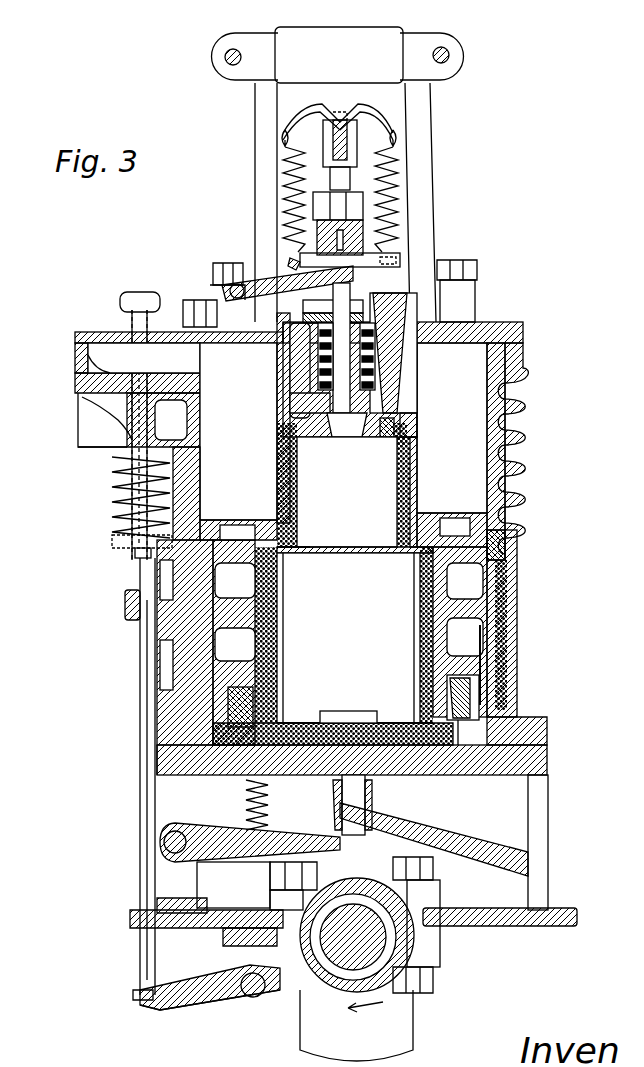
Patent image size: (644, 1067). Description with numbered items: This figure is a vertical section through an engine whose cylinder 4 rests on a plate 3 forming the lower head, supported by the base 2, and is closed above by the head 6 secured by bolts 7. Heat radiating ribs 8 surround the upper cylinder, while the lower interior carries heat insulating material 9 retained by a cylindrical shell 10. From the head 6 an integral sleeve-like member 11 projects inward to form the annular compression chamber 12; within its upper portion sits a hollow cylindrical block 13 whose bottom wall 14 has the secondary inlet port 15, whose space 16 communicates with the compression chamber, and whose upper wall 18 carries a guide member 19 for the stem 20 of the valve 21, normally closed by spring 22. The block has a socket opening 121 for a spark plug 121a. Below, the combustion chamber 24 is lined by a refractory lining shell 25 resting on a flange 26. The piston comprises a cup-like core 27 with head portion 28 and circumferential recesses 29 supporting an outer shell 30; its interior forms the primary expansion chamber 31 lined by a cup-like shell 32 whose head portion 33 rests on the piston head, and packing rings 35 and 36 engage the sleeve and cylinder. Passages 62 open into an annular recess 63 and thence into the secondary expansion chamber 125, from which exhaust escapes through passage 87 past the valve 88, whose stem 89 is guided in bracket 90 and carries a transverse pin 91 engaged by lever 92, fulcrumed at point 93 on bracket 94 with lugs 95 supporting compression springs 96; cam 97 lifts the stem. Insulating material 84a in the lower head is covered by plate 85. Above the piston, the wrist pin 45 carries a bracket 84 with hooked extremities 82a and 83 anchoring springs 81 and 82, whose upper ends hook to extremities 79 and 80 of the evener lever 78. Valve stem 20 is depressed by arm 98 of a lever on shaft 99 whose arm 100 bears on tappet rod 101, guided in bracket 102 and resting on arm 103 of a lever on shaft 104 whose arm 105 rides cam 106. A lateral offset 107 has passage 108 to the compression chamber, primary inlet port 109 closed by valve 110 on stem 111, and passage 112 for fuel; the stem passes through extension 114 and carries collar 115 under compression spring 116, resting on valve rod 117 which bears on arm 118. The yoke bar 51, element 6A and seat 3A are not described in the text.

The yoke cross bar 51 is at (385, 28).
The evener lever 78 is at (353, 112).
The hooked extremity 79 is at (286, 132).
The hooked extremity 80 is at (393, 132).
The spring 81 is at (281, 181).
The spring 82 is at (393, 160).
The wrist pin 45 is at (357, 228).
The hooked extremity 82a is at (292, 262).
The bracket 84 is at (367, 254).
The hooked extremity 83 is at (400, 258).
The arm 98 is at (262, 275).
The shaft 99 is at (232, 282).
The arm 100 is at (155, 298).
The tappet rod 101 is at (130, 318).
The bolts 7 is at (183, 314).
The socket opening 121 is at (440, 322).
The head 6 is at (482, 322).
The heat radiating ribs 8 is at (522, 401).
The annular compression chamber 12 is at (490, 455).
The combustion chamber 24 is at (366, 507).
The packing rings 35 is at (437, 512).
The packing rings 36 is at (528, 512).
The cylinder 4 is at (520, 553).
The cylindrical shell 10 is at (518, 567).
The heat insulating material 9 is at (518, 608).
The outer shell 30 is at (486, 590).
The cup-like core 27 is at (463, 657).
The passages 62 is at (428, 716).
The passage 6A is at (428, 710).
The secondary expansion chamber 125 is at (500, 720).
The plate 3 is at (546, 752).
The lateral offset 107 is at (78, 373).
The valve 110 is at (100, 360).
The passage 108 is at (182, 360).
The primary inlet port 109 is at (95, 418).
The passage 112 is at (88, 430).
The valve stem 111 is at (95, 449).
The wall 18 is at (276, 376).
The hollow cylindrical block 13 is at (276, 398).
The space 16 is at (277, 412).
The seat 3A is at (240, 520).
The extension 114 is at (112, 488).
The compression spring 116 is at (115, 518).
The collar 115 is at (117, 546).
The valve rod 117 is at (138, 578).
The bracket 102 is at (137, 600).
The spring 22 is at (388, 352).
The valve 21 is at (343, 436).
The stem 20 is at (418, 372).
The guide member 19 is at (447, 392).
The sleeve-like member 11 is at (420, 402).
The spark plug 121a is at (418, 433).
The secondary inlet port 15 is at (382, 437).
The bottom wall 14 is at (318, 470).
The lining shell 25 is at (300, 526).
The primary expansion chamber 31 is at (367, 558).
The flange 26 is at (393, 553).
The circumferential recesses 29 is at (270, 622).
The head portion 28 is at (253, 730).
The cup-like shell 32 is at (420, 650).
The head portion of lining 33 is at (305, 727).
The cover plate 85 is at (157, 760).
The valve 88 is at (320, 758).
The stem 89 is at (365, 808).
The transverse pin 91 is at (408, 824).
The annular recess 63 is at (460, 745).
The passage 87 is at (522, 798).
The bracket 90 is at (498, 824).
The heat insulating material 84a is at (215, 790).
The compression springs 96 is at (270, 802).
The lever 92 is at (330, 835).
The fulcrum point 93 is at (190, 820).
The bracket 94 is at (200, 878).
The lugs 95 is at (265, 862).
The cam 97 is at (328, 896).
The arm 105 is at (298, 990).
The base 2 is at (505, 926).
The cam 106 is at (383, 1005).
The shaft 104 is at (253, 1000).
The arm 103 is at (150, 1018).
The arm 118 is at (132, 992).